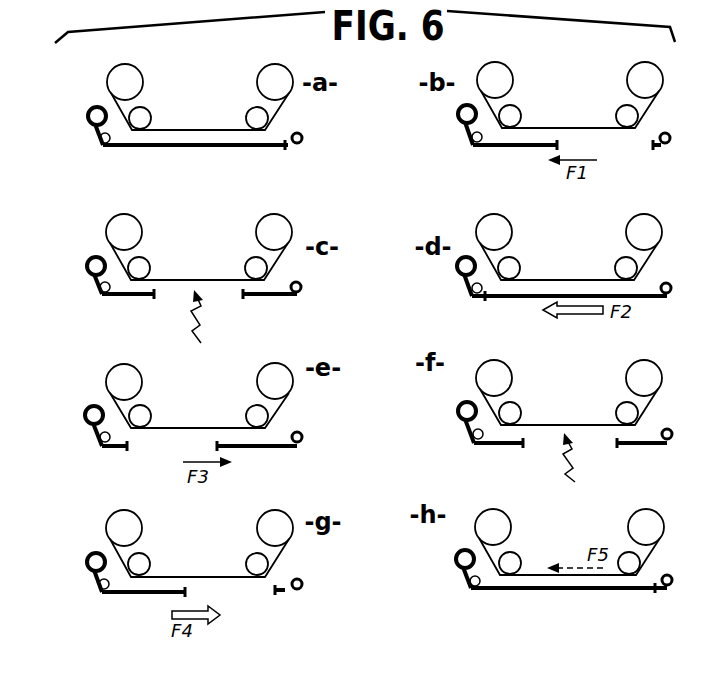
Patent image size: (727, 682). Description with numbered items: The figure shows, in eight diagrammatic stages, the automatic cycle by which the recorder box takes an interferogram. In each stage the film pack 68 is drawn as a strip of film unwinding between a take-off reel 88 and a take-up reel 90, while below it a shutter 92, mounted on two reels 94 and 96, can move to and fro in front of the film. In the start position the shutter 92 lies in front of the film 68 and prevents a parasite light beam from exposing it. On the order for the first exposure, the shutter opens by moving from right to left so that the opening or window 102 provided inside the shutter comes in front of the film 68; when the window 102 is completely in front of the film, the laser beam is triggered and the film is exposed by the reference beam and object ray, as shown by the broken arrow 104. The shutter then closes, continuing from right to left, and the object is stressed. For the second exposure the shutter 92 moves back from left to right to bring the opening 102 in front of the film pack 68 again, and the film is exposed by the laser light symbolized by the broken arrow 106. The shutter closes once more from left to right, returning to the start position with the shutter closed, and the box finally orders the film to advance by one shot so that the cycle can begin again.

The film pack 68 is at (188, 130).
The take-off reel 88 is at (263, 75).
The take-up reel 90 is at (134, 77).
The shutter 92 is at (118, 150).
The reel 94 is at (302, 134).
The reel 96 is at (92, 108).
The opening or window 102 is at (650, 147).
The broken arrow 104 is at (205, 316).
The broken arrow 106 is at (580, 465).